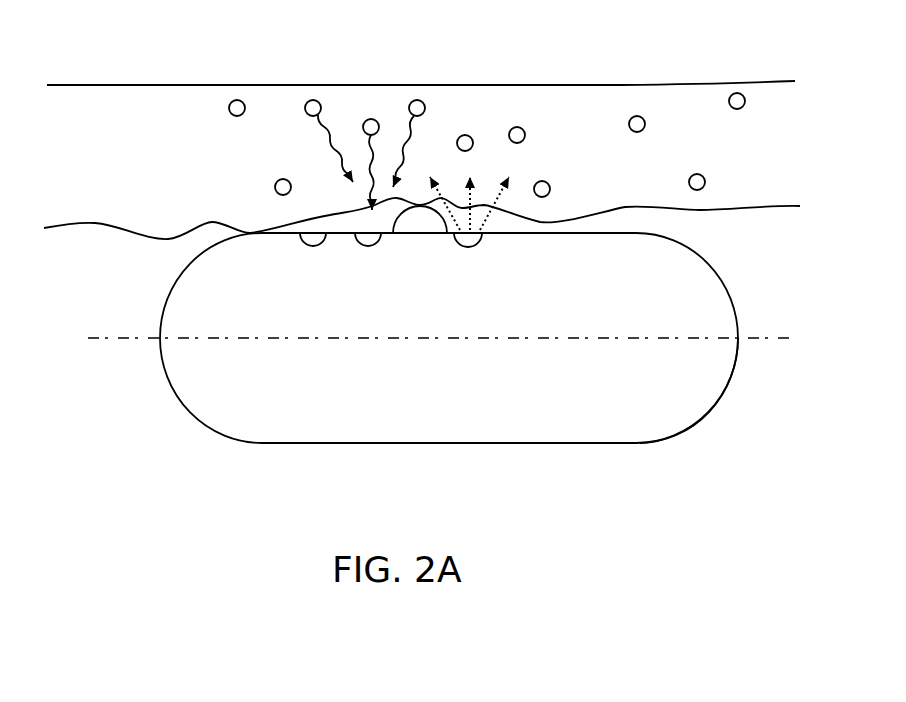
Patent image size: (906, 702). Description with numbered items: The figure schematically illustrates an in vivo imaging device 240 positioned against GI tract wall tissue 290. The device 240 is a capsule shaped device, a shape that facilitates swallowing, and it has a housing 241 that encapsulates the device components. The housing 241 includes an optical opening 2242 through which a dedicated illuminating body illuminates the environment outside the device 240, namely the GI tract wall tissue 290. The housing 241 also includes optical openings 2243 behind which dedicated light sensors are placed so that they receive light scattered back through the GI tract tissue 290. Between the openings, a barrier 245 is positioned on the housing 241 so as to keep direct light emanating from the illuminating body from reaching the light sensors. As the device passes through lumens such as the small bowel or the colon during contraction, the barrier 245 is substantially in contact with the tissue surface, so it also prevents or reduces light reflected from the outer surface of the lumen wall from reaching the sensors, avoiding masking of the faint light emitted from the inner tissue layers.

The GI tract wall tissue 290 is at (687, 92).
The device 240 is at (697, 293).
The housing 241 is at (692, 427).
The optical openings 2243 is at (368, 245).
The optical opening 2242 is at (468, 246).
The barrier 245 is at (420, 223).